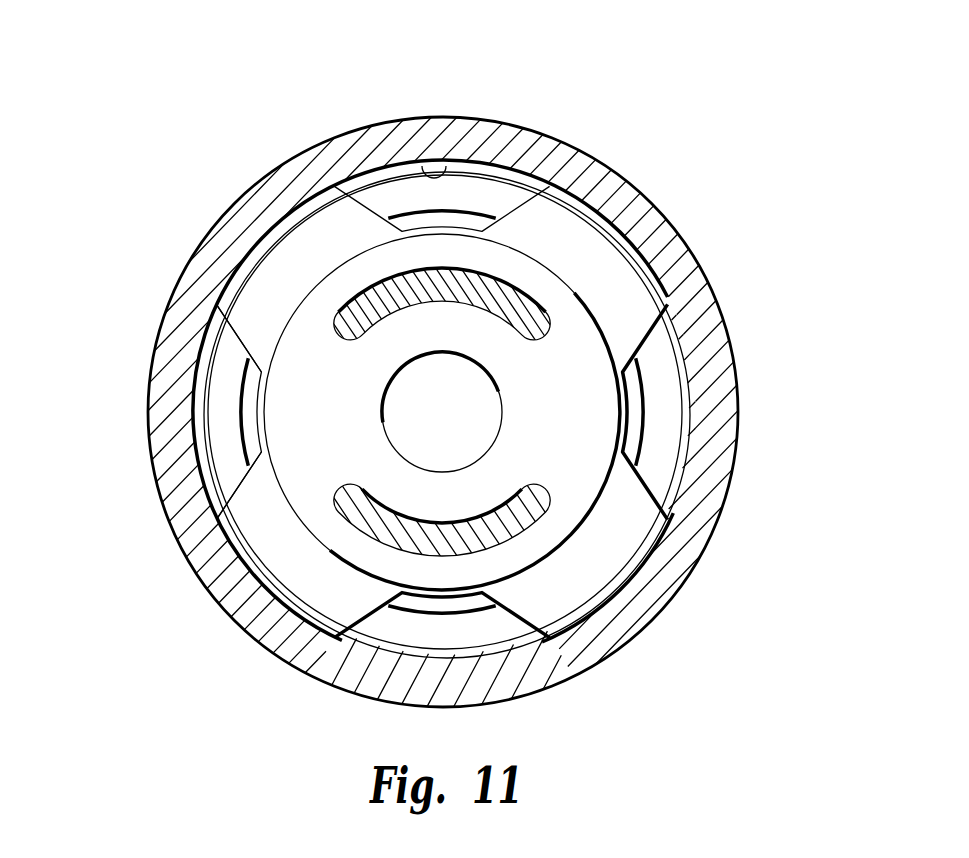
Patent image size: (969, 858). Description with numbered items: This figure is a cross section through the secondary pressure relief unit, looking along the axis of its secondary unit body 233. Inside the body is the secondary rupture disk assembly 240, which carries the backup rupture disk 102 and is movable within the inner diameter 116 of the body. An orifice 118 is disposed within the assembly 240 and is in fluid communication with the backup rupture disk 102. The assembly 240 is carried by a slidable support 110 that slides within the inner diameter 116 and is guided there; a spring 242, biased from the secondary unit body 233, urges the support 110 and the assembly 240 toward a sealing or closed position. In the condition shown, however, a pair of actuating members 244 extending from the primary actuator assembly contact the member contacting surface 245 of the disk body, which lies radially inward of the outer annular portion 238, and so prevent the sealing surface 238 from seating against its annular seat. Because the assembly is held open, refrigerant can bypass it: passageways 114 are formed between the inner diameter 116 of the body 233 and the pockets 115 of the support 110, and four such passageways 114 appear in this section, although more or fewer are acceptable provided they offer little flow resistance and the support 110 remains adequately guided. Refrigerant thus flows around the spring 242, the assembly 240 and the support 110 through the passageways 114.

The secondary rupture disk 102 is at (402, 418).
The slidable support 110 is at (245, 303).
The passageways 114 is at (430, 218).
The pockets 115 is at (245, 373).
The inner diameter 116 is at (432, 173).
The orifice 118 is at (503, 403).
The secondary unit body 233 is at (622, 600).
The outer annular portion 238 is at (572, 303).
The secondary rupture disk assembly 240 is at (317, 298).
The spring 242 is at (390, 620).
The actuating members 244 is at (508, 310).
The member contacting surface 245 is at (637, 423).